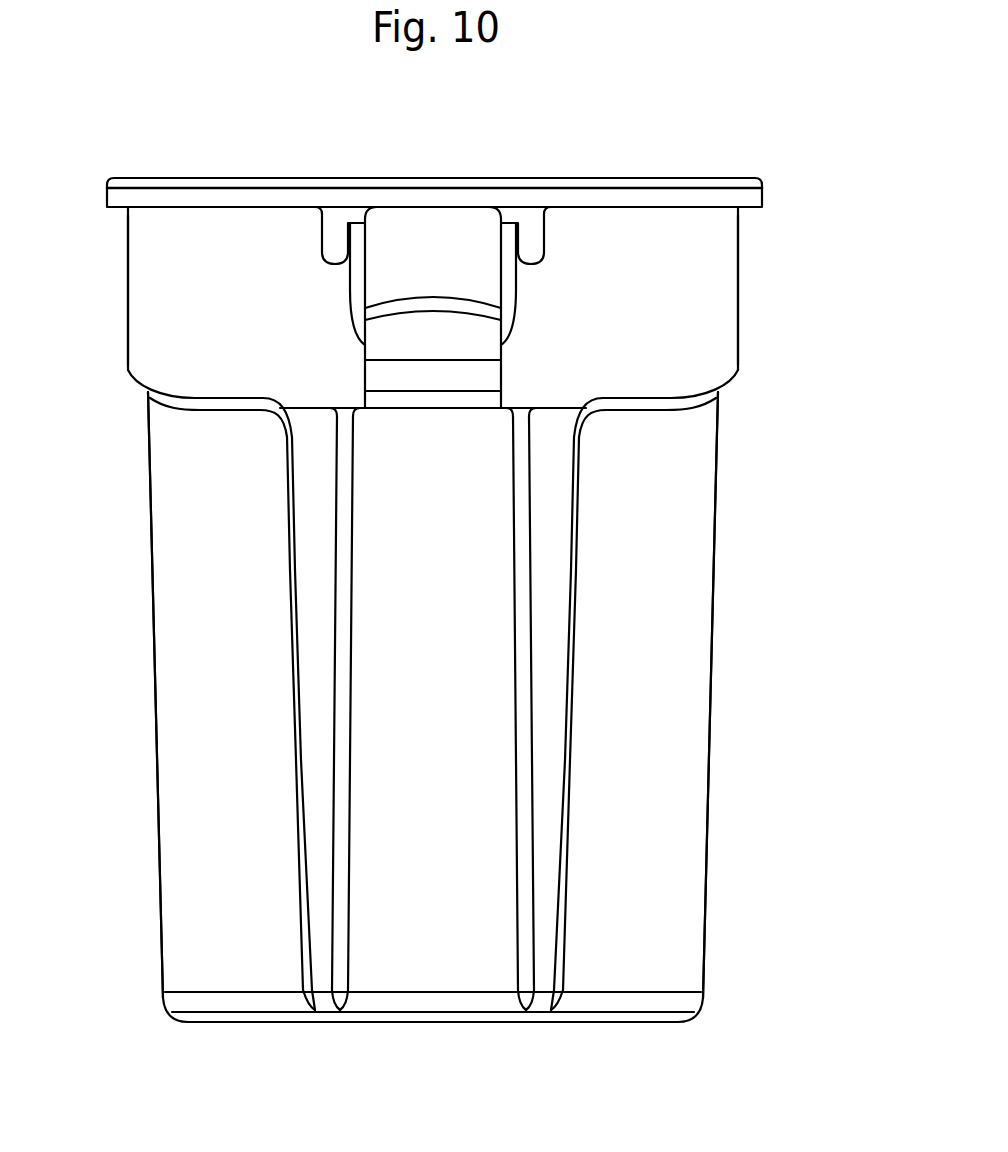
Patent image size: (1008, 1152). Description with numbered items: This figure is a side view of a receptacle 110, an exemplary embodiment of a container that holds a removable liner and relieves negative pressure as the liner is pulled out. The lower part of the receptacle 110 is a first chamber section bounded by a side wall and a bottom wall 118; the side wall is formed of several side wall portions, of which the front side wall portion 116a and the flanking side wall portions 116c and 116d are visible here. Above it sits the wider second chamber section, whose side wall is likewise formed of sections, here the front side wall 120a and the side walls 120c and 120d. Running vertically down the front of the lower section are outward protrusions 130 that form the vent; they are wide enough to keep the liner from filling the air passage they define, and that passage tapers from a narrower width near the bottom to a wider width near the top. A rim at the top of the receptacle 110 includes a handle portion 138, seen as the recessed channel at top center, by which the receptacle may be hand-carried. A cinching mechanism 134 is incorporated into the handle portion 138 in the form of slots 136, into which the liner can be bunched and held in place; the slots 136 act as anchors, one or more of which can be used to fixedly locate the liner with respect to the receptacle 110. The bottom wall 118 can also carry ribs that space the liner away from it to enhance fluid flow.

The receptacle 110 is at (822, 148).
The side wall portion 116a is at (454, 862).
The side wall portion 116c is at (157, 688).
The side wall portion 116d is at (709, 688).
The bottom wall 118 is at (423, 1022).
The side wall 120a is at (598, 385).
The side wall 120c is at (128, 293).
The side wall 120d is at (738, 293).
The outward protrusions 130 is at (298, 760).
The cinching mechanism 134 is at (326, 276).
The slots 136 is at (338, 254).
The handle portion 138 is at (435, 382).